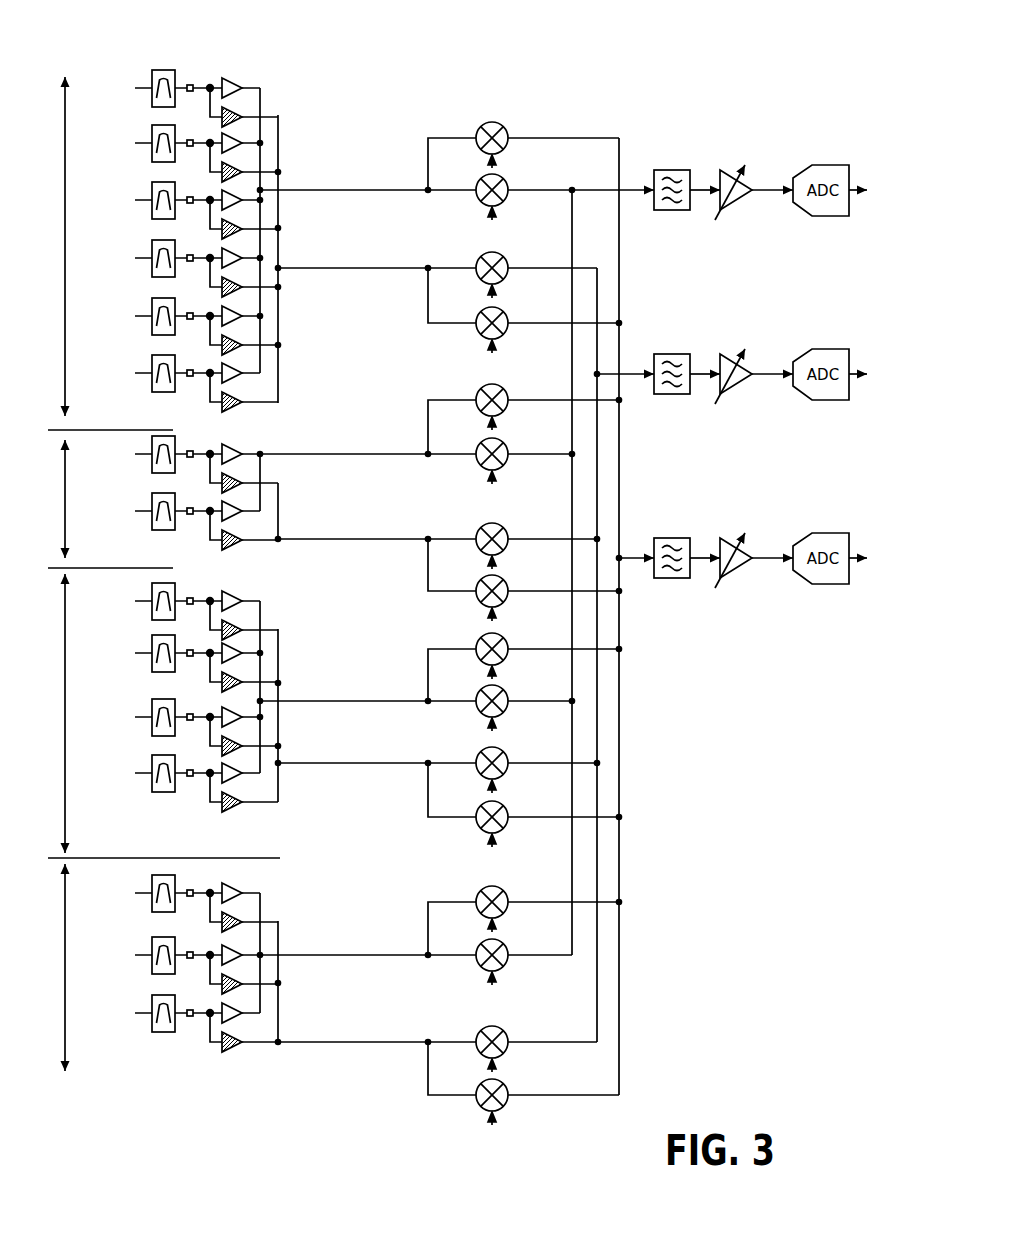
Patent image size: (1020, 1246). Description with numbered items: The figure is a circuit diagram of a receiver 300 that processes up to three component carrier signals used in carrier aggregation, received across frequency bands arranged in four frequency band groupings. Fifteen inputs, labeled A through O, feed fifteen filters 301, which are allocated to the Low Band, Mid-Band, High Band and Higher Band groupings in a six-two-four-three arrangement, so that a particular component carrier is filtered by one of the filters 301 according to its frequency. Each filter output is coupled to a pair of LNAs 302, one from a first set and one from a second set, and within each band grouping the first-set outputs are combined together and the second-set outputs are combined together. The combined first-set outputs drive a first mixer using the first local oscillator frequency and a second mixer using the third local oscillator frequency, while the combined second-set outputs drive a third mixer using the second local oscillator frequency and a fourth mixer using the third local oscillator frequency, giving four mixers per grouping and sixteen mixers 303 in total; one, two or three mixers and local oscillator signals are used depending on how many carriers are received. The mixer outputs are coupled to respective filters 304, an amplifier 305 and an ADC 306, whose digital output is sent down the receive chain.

The receiver 300 is at (722, 56).
The filters 301 is at (163, 66).
The LNAs 302 is at (234, 75).
The mixers 303 is at (491, 120).
The filters 304 is at (672, 170).
The amplifier 305 is at (728, 170).
The ADC 306 is at (815, 165).